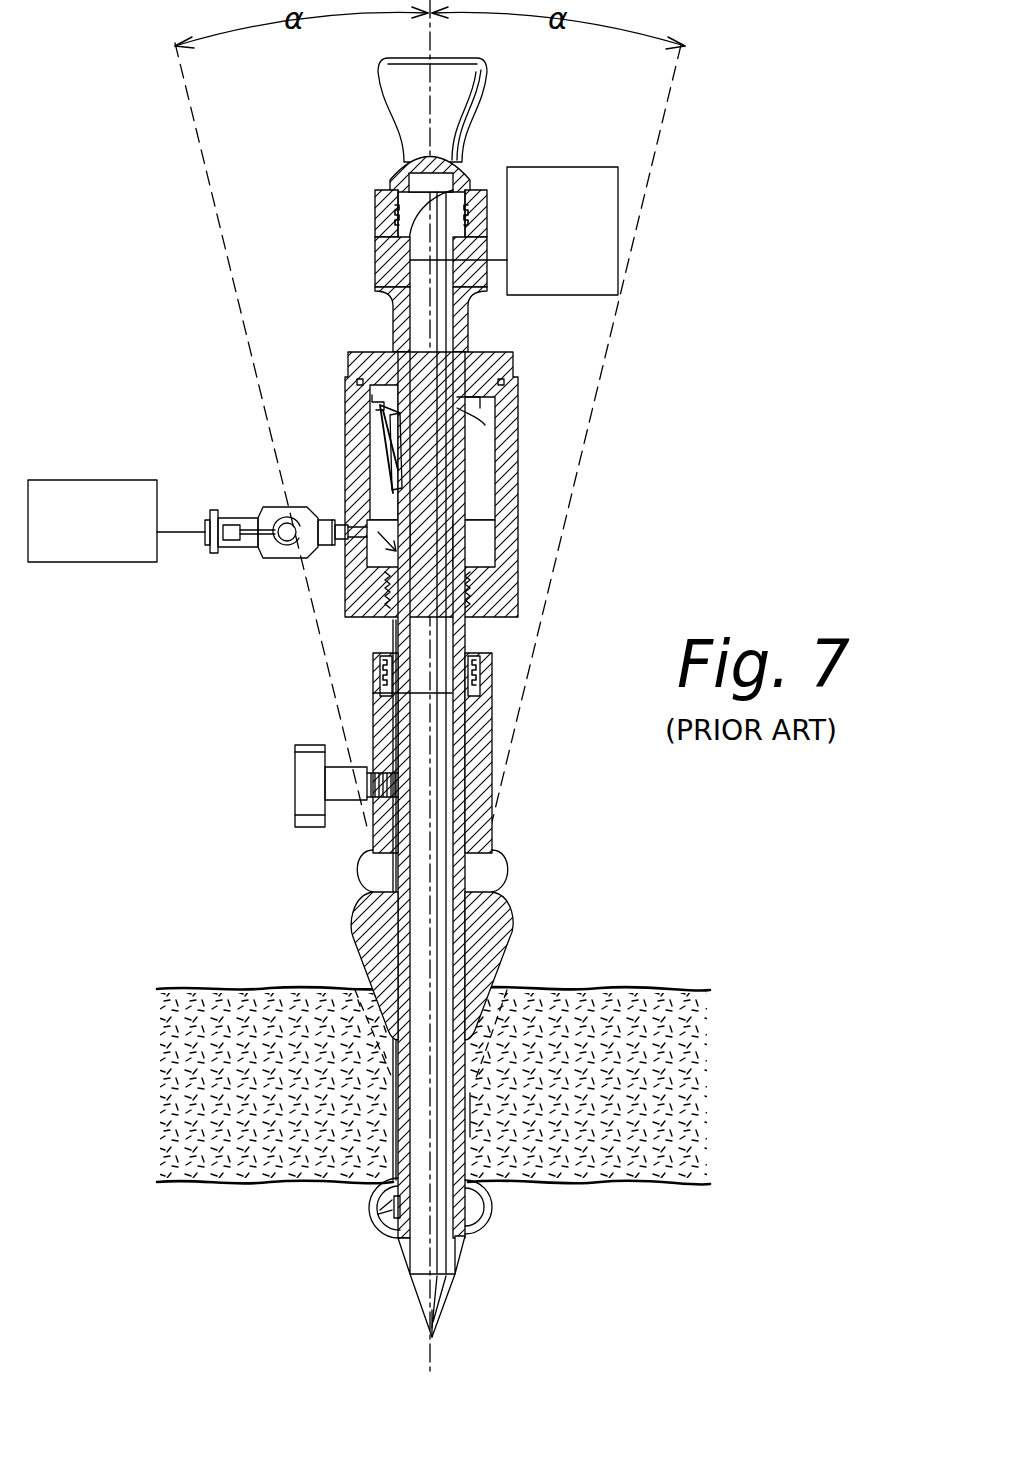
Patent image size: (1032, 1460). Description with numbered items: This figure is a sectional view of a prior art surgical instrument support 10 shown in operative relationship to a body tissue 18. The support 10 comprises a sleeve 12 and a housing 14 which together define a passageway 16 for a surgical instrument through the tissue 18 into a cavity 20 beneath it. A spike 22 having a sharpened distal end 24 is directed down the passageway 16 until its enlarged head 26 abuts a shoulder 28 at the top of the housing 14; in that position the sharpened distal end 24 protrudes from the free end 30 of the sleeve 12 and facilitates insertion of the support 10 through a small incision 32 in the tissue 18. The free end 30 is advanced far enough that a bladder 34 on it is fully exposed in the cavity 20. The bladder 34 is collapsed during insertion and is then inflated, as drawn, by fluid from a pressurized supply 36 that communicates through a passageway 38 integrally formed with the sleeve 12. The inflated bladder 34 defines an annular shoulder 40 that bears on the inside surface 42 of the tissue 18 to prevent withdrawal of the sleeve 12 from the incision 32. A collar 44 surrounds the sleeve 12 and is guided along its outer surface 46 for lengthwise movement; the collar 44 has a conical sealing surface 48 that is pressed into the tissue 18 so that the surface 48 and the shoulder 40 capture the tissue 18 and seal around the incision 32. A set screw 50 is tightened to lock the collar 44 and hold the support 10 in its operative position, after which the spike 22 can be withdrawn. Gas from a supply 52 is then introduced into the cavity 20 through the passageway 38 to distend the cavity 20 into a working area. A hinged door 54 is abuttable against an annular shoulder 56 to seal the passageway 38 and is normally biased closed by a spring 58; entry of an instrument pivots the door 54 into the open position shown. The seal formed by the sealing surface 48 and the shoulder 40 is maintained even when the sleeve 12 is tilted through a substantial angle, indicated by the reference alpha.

The surgical instrument support 10 is at (690, 148).
The sleeve 12 is at (470, 1093).
The housing 14 is at (518, 523).
The passageway 16 is at (373, 693).
The body tissue 18 is at (597, 1147).
The cavity 20 is at (631, 1339).
The spike 22 is at (412, 1272).
The sharpened distal end 24 is at (455, 1290).
The enlarged head 26 is at (455, 124).
The shoulder 28 is at (380, 190).
The free end 30 is at (460, 1258).
The incision 32 is at (460, 1120).
The bladder 34 is at (374, 1232).
The pressurized supply 36 is at (109, 552).
The passageway 38 is at (397, 877).
The annular shoulder 40 is at (365, 1188).
The inside surface 42 is at (585, 1187).
The collar 44 is at (490, 750).
The outer surface 46 is at (470, 1137).
The conical sealing surface 48 is at (512, 922).
The set screw 50 is at (295, 770).
The gas supply 52 is at (575, 283).
The hinged door 54 is at (382, 452).
The annular shoulder 56 is at (457, 410).
The spring 58 is at (383, 407).